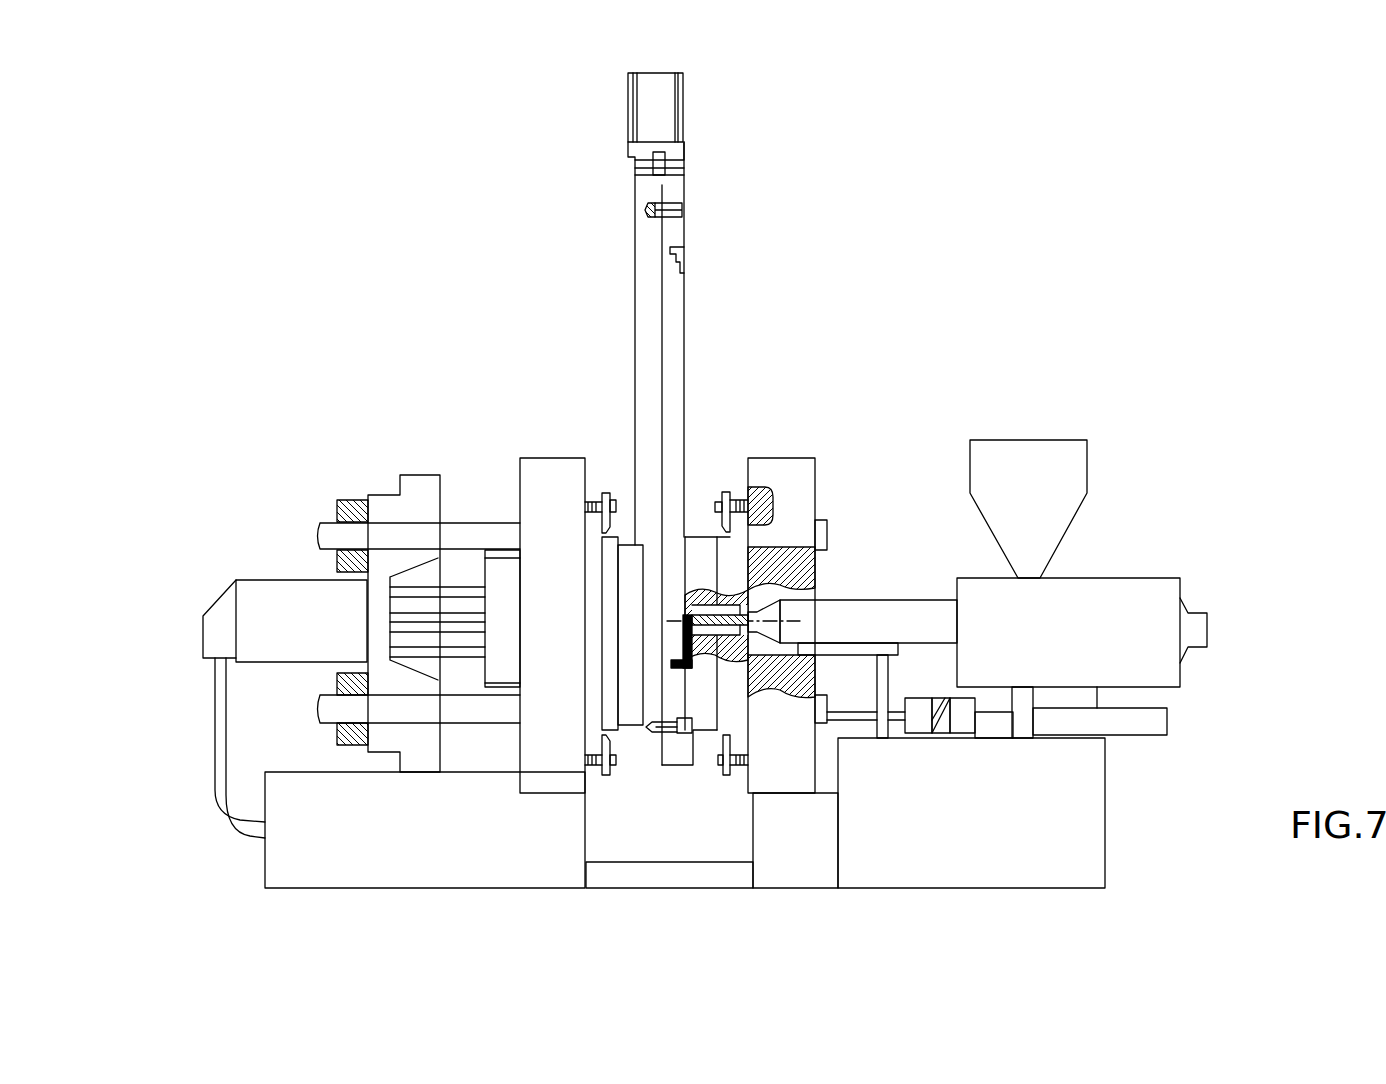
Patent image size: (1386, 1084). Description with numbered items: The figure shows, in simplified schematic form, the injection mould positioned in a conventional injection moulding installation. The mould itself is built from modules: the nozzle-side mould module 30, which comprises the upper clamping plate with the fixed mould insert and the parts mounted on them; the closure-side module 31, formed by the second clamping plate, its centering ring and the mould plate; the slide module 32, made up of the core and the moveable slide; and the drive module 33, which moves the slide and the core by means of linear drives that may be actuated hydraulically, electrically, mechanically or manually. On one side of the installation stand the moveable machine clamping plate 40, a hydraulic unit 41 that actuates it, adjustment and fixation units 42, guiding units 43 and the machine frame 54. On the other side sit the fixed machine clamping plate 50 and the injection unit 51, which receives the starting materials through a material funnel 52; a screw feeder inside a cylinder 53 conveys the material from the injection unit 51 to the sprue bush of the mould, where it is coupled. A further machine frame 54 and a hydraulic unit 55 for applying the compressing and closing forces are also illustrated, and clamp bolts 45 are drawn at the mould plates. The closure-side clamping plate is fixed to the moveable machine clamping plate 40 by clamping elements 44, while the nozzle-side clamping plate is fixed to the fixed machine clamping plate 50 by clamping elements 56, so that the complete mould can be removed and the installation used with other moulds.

The nozzle-side mould module 30 is at (710, 522).
The closure-side module 31 is at (636, 745).
The slide module 32 is at (696, 288).
The drive module 33 is at (700, 105).
The moveable machine clamping plate 40 is at (548, 505).
The hydraulic unit 41 is at (278, 613).
The adjustment and fixation units 42 is at (362, 540).
The guiding units 43 is at (500, 538).
The clamping elements 44 is at (603, 573).
The clamp bolts 45 is at (590, 535).
The fixed machine clamping plate 50 is at (788, 488).
The injection unit 51 is at (1125, 612).
The material funnel 52 is at (1040, 470).
The cylinder 53 is at (895, 622).
The machine frame 54 is at (312, 860).
The hydraulic unit 55 is at (958, 718).
The clamping elements 56 is at (737, 557).